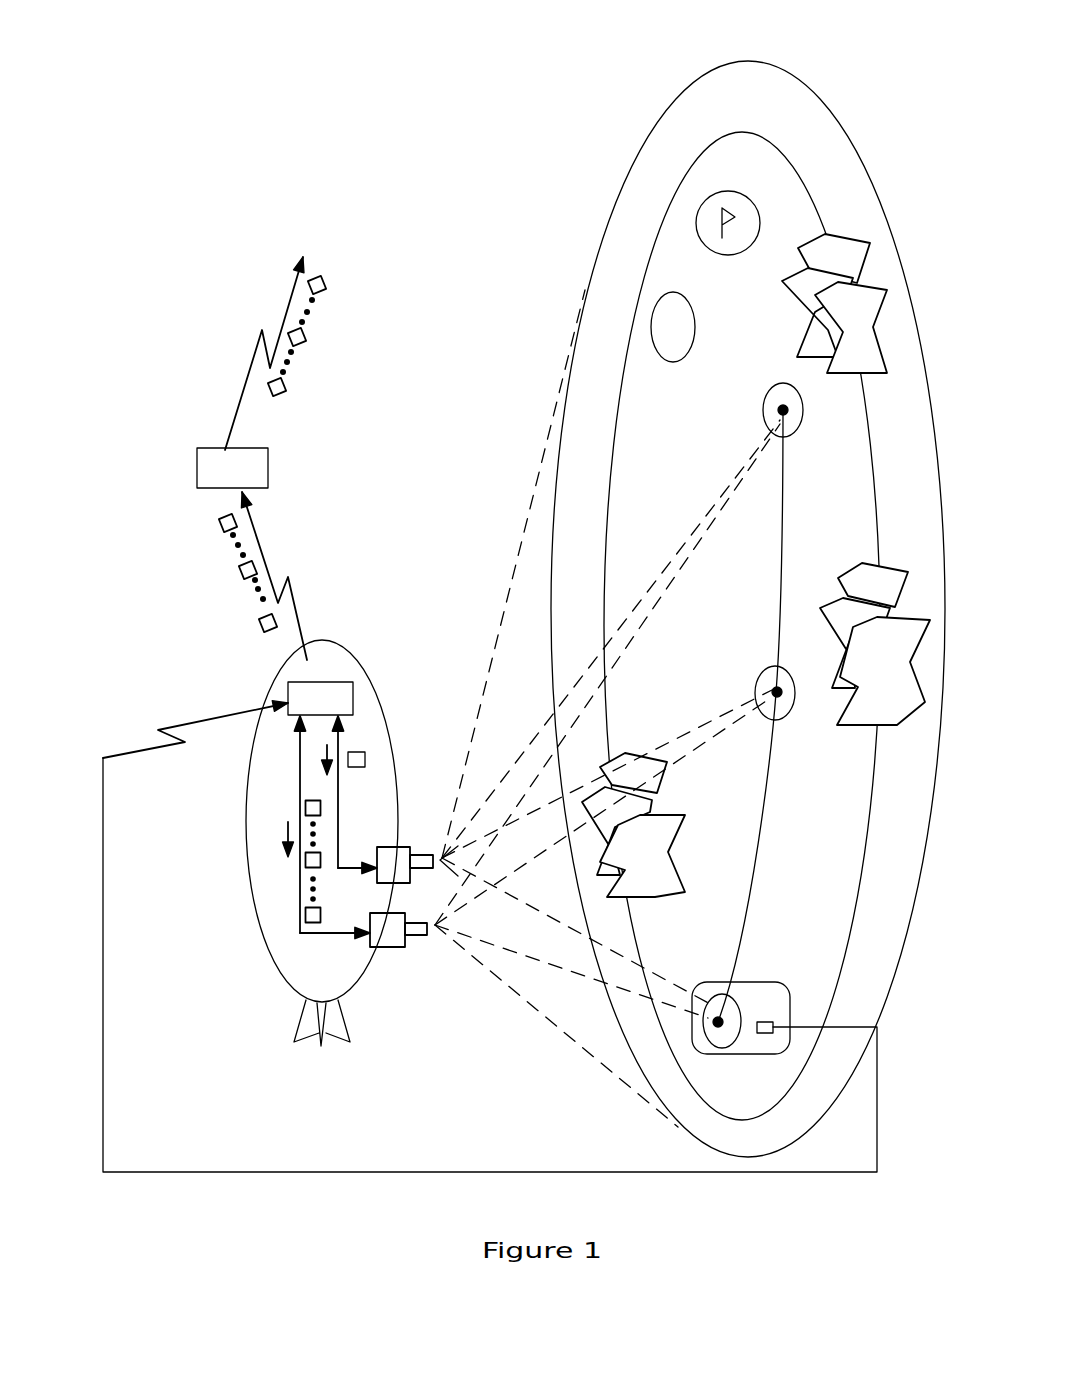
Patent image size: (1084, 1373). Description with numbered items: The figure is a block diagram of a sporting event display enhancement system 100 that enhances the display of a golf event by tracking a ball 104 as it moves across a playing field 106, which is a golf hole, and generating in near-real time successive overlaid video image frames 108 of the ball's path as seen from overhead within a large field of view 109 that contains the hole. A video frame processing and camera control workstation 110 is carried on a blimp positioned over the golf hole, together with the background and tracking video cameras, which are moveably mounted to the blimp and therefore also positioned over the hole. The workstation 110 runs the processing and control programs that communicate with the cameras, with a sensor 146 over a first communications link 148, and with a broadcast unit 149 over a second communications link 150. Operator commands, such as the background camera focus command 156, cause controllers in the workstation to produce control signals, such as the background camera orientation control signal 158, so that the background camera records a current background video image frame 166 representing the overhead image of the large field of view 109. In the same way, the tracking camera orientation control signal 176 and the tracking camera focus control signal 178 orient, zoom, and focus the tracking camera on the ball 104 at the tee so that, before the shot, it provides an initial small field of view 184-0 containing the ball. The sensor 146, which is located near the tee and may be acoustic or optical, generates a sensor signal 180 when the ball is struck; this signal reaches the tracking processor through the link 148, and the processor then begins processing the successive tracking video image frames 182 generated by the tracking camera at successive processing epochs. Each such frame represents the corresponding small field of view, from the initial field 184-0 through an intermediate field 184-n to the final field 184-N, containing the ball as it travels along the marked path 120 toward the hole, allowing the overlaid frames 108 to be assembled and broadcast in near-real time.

The sporting event display enhancement system 100 is at (350, 107).
The ball 104 is at (770, 693).
The playing field 106 is at (878, 513).
The successive overlaid video image frames 108 is at (323, 318).
The large field of view 109 is at (920, 363).
The video frame processing and camera control workstation 110 is at (353, 697).
The path of travel 120 is at (762, 868).
The sensor 146 is at (765, 1033).
The first communications link 148 is at (203, 715).
The broadcast unit 149 is at (268, 475).
The second communications link 150 is at (292, 588).
The background camera focus command 156 is at (323, 757).
The background camera orientation control signal 158 is at (252, 794).
The current background video image frame 166 is at (365, 758).
The tracking camera orientation control signal 176 is at (287, 832).
The tracking camera focus control signal 178 is at (180, 965).
The sensor signal 180 is at (345, 1157).
The successive tracking video image frames 182 is at (303, 885).
The small field of view at epoch N 184-N is at (803, 413).
The small field of view at epoch n 184-n is at (777, 692).
The initial small field of view 184-0 is at (740, 1012).